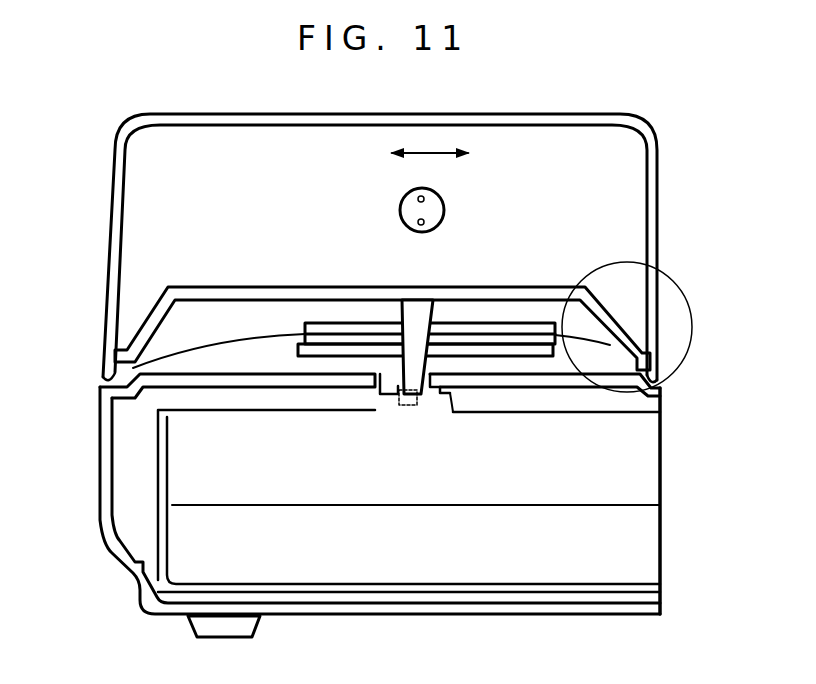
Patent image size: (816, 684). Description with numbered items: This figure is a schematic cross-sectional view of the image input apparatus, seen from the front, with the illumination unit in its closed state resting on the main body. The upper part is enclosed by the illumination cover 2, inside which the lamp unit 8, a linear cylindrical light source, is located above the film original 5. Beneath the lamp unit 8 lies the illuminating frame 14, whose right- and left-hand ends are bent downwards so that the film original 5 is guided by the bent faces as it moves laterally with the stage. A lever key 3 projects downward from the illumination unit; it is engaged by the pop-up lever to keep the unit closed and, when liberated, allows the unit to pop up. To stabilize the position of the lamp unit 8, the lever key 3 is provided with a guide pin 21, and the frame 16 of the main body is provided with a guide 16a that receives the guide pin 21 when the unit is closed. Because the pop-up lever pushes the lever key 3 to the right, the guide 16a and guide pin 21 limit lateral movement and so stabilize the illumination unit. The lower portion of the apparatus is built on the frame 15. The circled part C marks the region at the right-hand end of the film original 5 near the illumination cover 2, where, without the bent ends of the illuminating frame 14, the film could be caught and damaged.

The illumination cover 2 is at (652, 158).
The lever key 3 is at (418, 315).
The film original 5 is at (262, 338).
The lamp unit 8 is at (432, 215).
The illuminating frame 14 is at (148, 327).
The frame 15 is at (638, 553).
The frame of the main body 16 is at (638, 460).
The guide 16a is at (448, 395).
The guide pin 21 is at (404, 404).
The circled part C is at (692, 324).